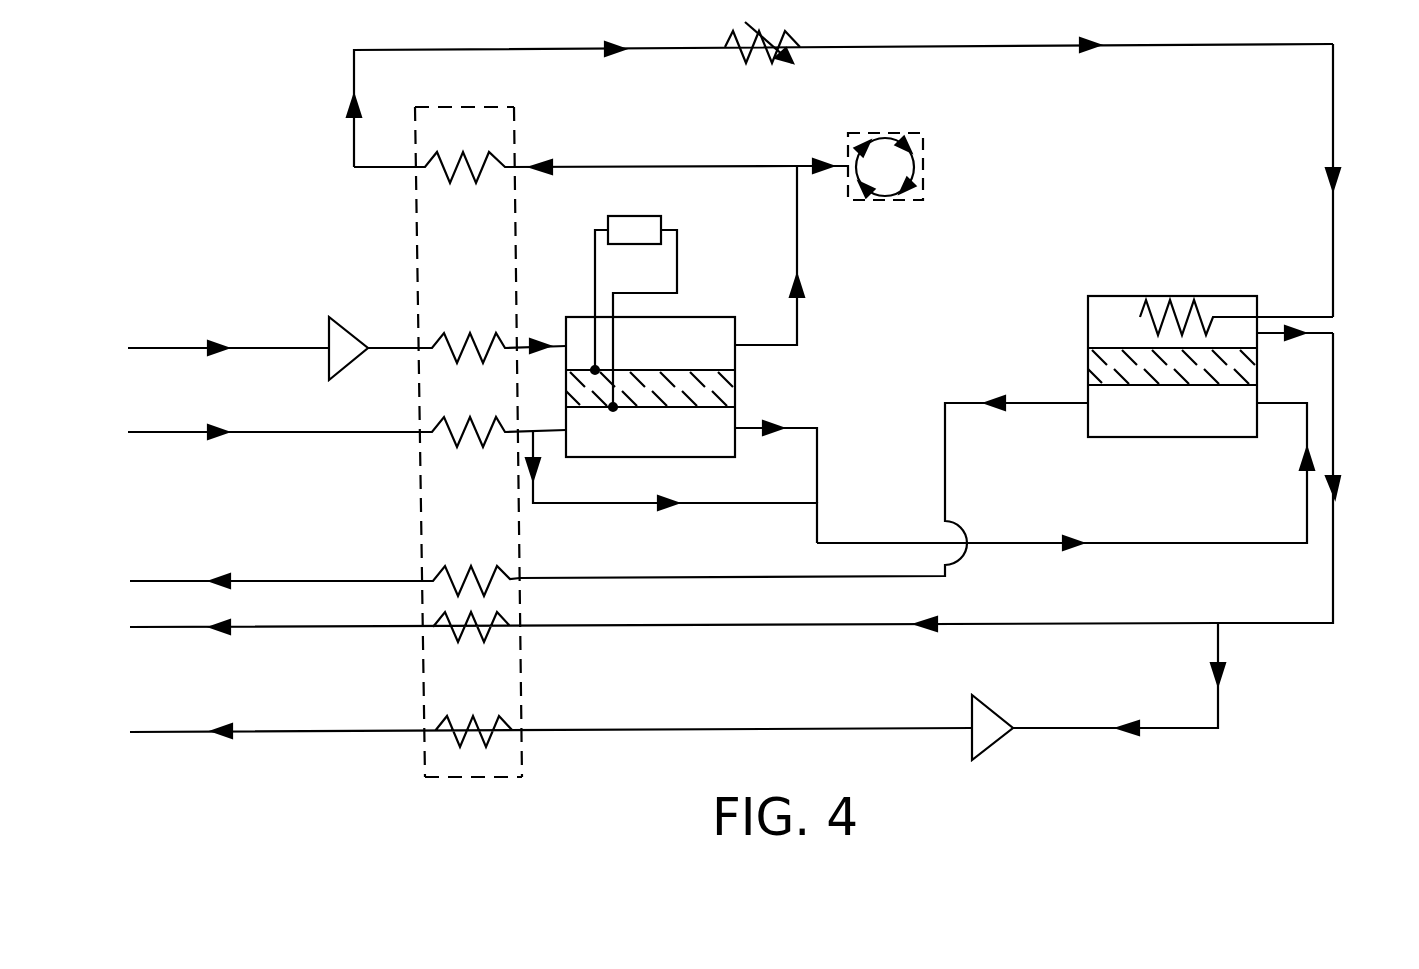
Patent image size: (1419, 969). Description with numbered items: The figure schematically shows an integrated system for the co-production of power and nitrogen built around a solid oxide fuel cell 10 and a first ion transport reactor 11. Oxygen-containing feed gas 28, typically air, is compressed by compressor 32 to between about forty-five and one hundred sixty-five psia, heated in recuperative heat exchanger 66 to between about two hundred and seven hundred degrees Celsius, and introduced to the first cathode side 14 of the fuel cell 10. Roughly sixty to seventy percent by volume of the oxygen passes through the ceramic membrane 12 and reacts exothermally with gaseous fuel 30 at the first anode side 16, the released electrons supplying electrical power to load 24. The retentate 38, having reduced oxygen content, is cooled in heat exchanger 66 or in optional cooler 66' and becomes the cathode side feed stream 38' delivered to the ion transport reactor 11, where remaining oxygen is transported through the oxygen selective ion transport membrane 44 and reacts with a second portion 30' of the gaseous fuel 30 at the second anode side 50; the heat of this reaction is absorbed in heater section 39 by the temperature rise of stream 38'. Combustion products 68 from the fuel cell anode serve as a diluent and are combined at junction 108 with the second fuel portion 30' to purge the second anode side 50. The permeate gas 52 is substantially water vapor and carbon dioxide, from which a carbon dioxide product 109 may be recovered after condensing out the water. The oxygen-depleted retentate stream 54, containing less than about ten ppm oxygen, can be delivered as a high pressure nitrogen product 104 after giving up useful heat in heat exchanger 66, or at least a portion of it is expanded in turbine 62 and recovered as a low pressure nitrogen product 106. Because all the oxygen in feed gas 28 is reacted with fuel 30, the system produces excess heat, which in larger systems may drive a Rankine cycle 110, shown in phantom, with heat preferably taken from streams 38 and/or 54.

The solid oxide fuel cell 10 is at (670, 363).
The first ion transport reactor 11 is at (1185, 351).
The ceramic membrane 12 is at (570, 382).
The first cathode side 14 is at (688, 370).
The first anode side 16 is at (697, 403).
The load 24 is at (632, 225).
The oxygen-containing feed gas 28 is at (160, 348).
The gaseous fuel 30 is at (345, 427).
The second portion of gaseous fuel 30' is at (1065, 476).
The compressor 32 is at (347, 332).
The retentate 38 is at (806, 252).
The cathode side feed stream 38' is at (1293, 180).
The heater section 39 is at (1182, 308).
The oxygen selective ion transport membrane 44 is at (1113, 367).
The second anode side 50 is at (1122, 383).
The permeate gas 52 is at (945, 467).
The retentate stream 54 is at (1336, 396).
The turbine 62 is at (983, 737).
The recuperative heat exchanger 66 is at (835, 407).
The optional cooler 66' is at (774, 64).
The combustion products 68 is at (815, 454).
The high pressure nitrogen product 104 is at (273, 627).
The low pressure nitrogen product 106 is at (262, 731).
The junction 108 is at (817, 503).
The carbon dioxide product 109 is at (272, 581).
The Rankine cycle 110 is at (918, 138).